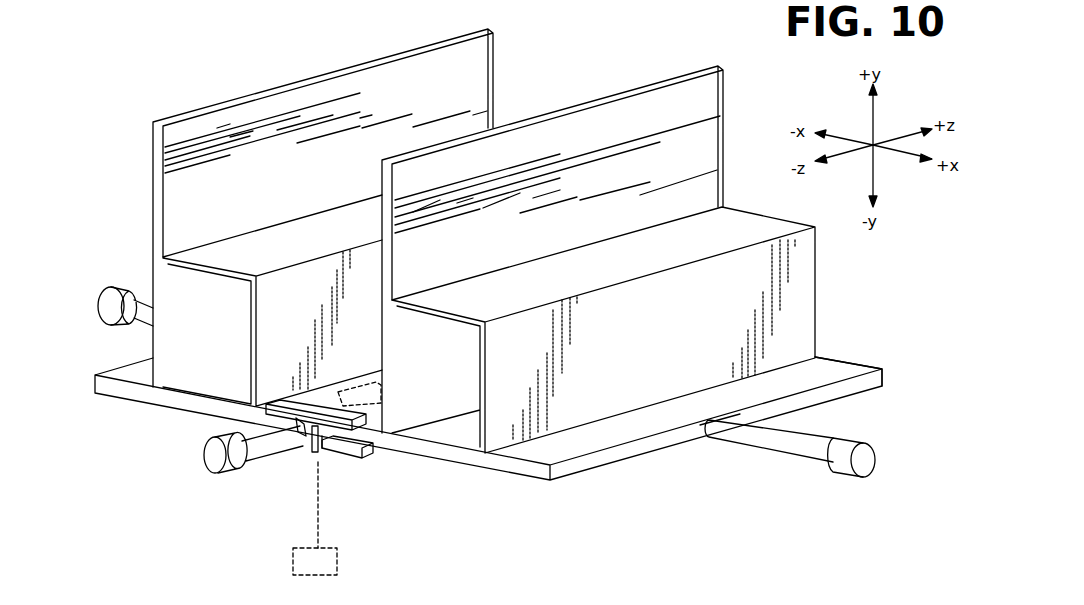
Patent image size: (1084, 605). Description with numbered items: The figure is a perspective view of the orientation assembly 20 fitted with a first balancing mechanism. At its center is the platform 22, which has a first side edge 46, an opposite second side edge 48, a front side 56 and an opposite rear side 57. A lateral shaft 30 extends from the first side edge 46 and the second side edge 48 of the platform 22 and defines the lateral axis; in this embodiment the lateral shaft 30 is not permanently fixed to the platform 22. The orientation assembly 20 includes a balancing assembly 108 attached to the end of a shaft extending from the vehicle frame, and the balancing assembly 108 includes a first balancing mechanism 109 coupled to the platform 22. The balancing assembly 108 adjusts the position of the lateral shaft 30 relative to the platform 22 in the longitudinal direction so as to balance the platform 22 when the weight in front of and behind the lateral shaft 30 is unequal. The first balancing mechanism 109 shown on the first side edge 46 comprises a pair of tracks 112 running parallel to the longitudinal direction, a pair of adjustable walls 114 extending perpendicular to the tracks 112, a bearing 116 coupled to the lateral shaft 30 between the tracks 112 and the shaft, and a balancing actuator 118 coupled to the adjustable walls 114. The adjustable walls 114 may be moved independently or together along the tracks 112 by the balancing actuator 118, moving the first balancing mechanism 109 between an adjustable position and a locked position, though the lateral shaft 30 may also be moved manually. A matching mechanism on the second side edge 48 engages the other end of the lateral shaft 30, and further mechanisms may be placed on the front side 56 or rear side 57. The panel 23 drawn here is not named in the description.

The orientation assembly 20 is at (90, 129).
The panel 23 is at (238, 95).
The platform 22 is at (548, 488).
The first side edge 46 is at (494, 465).
The second side edge 48 is at (861, 366).
The rear side 57 is at (100, 371).
The front side 56 is at (623, 455).
The lateral shaft 30 is at (267, 461).
The first balancing mechanism 109 is at (243, 428).
The balancing assembly 108 is at (238, 492).
The adjustable walls 114 is at (276, 413).
The bearing 116 is at (306, 420).
The tracks 112 is at (370, 457).
The balancing actuator 118 is at (380, 383).